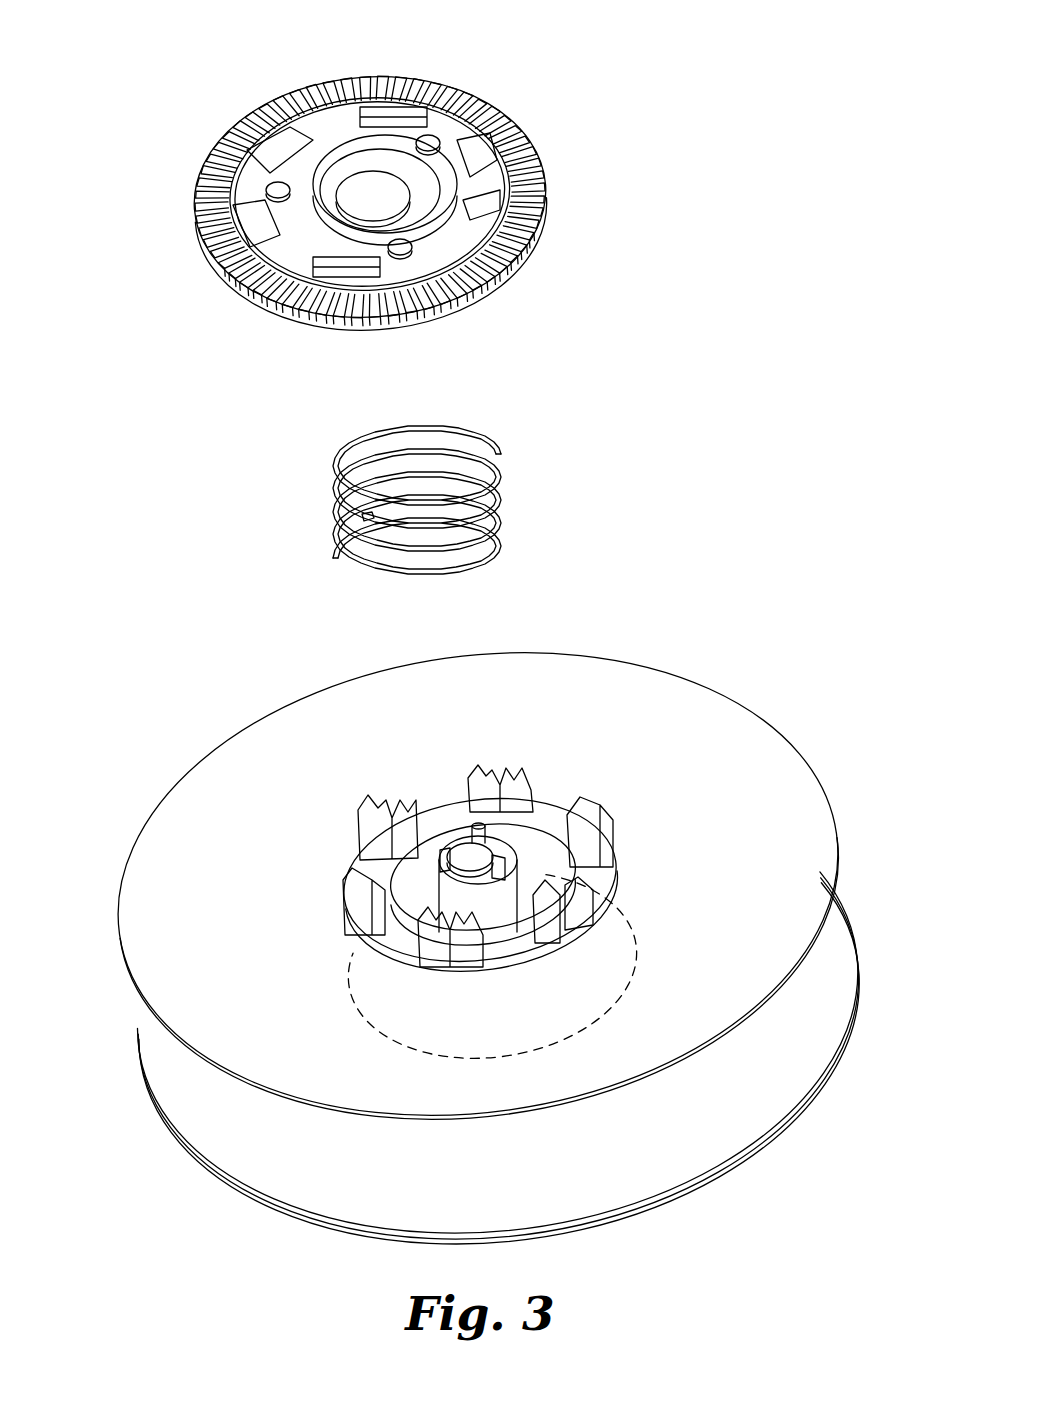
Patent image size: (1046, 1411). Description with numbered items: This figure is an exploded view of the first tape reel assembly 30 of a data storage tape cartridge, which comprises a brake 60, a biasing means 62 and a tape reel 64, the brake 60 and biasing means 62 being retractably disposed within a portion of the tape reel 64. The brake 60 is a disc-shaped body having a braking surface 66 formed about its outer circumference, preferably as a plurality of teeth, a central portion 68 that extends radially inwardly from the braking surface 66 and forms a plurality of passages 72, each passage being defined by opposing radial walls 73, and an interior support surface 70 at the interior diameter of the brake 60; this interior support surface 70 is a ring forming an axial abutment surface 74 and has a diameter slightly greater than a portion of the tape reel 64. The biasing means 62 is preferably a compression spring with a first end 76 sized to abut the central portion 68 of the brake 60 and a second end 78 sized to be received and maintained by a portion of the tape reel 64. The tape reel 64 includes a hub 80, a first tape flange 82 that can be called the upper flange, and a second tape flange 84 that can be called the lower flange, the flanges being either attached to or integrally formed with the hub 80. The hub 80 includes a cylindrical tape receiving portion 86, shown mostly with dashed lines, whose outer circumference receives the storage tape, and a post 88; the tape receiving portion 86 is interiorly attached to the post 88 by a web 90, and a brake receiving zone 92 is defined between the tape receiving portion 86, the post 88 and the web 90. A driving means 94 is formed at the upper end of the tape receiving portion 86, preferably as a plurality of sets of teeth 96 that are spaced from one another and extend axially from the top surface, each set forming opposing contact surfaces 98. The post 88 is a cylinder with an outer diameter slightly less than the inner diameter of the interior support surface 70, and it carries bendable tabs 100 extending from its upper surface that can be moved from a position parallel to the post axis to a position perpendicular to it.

The first tape reel assembly 30 is at (612, 68).
The brake 60 is at (213, 151).
The biasing means 62 is at (330, 467).
The tape reel 64 is at (178, 786).
The braking surface 66 is at (541, 166).
The central portion 68 is at (453, 190).
The interior support surface 70 is at (382, 193).
The passages 72 is at (385, 108).
The radial walls 73 is at (447, 252).
The axial abutment surface 74 is at (398, 196).
The first end 76 is at (362, 519).
The second end 78 is at (376, 492).
The hub 80 is at (430, 812).
The first tape flange 82 is at (722, 708).
The second tape flange 84 is at (760, 1102).
The tape receiving portion 86 is at (632, 900).
The post 88 is at (468, 852).
The web 90 is at (413, 913).
The brake receiving zone 92 is at (541, 845).
The driving means 94 is at (340, 915).
The sets of teeth 96 is at (495, 775).
The contact surfaces 98 is at (420, 947).
The bendable tabs 100 is at (512, 876).